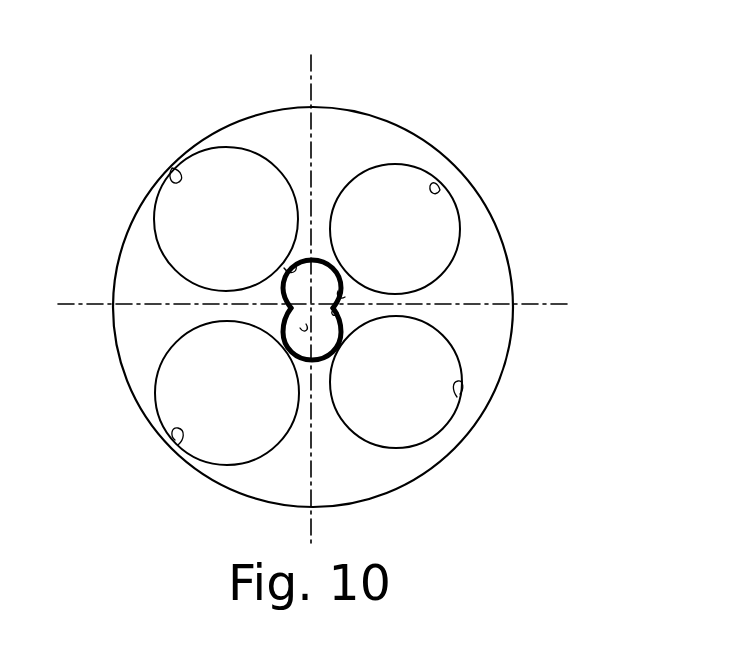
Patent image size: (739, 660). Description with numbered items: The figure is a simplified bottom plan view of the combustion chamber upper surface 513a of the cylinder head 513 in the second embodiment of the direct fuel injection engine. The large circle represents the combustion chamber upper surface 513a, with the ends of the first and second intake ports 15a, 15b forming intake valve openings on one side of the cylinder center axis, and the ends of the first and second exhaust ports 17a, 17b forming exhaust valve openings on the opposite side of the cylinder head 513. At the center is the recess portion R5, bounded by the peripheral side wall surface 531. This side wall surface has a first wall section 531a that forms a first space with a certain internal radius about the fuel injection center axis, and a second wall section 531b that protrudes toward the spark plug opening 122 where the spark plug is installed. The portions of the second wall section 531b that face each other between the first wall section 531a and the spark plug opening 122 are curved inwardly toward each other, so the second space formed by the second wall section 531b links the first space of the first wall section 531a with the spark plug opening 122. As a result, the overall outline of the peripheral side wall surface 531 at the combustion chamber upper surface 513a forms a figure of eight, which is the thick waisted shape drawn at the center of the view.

The spark plug opening 122 is at (284, 268).
The cylinder head 513 is at (348, 278).
The combustion chamber upper surface 513a is at (340, 127).
The peripheral side wall surface 531 is at (474, 311).
The first wall section 531a is at (338, 313).
The second wall section 531b is at (345, 297).
The first intake port 15a is at (457, 397).
The second intake port 15b is at (440, 190).
The first exhaust port 17a is at (178, 445).
The second exhaust port 17b is at (172, 168).
The recess portion R5 is at (300, 328).